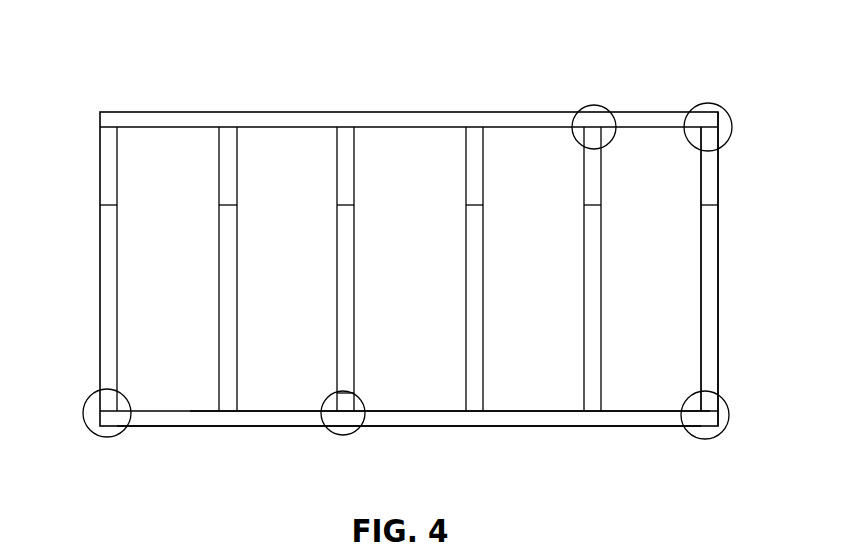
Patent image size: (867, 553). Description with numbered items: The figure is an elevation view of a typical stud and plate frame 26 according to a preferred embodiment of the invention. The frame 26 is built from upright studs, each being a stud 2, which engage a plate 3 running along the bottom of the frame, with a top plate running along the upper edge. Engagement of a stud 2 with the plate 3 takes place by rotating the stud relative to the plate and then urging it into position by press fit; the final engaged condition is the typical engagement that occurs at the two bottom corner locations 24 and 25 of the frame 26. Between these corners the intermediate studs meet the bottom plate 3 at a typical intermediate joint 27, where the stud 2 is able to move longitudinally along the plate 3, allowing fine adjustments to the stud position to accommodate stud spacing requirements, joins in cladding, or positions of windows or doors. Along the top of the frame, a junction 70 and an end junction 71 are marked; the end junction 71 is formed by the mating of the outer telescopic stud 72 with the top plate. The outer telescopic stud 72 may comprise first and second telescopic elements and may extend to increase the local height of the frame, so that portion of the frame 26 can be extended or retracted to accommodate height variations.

The frame 26 is at (412, 254).
The stud 2 is at (105, 313).
The plate 3 is at (219, 418).
The location 24 is at (97, 435).
The location 25 is at (700, 438).
The intermediate joint 27 is at (327, 433).
The junction 70 is at (603, 105).
The end junction 71 is at (722, 107).
The outer telescopic stud 72 is at (712, 168).